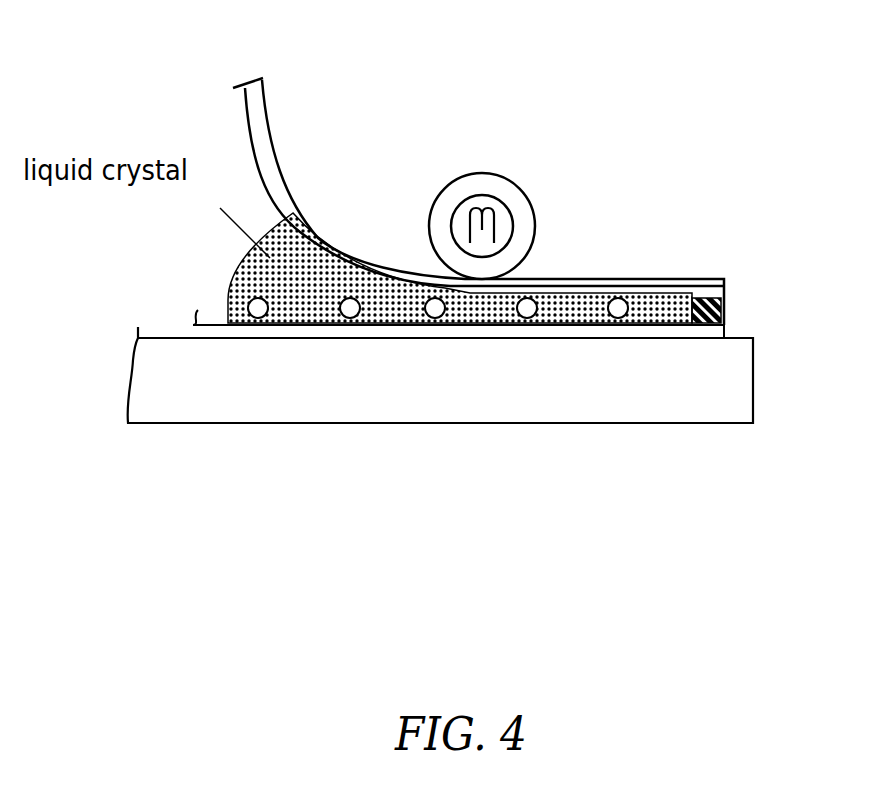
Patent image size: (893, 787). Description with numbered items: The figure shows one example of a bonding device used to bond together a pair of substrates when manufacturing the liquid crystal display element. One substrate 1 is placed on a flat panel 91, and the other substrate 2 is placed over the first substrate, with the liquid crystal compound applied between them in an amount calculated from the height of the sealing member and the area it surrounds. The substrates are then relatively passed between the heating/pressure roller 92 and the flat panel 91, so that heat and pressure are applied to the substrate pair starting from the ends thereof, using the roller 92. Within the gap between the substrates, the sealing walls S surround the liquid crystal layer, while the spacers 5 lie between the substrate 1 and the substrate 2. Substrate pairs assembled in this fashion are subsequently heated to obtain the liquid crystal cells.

The substrate 1 is at (217, 332).
The substrate 2 is at (263, 100).
The spacers 5 is at (527, 316).
The flat panel 91 is at (433, 393).
The heating/pressure roller 92 is at (483, 173).
The sealing walls S is at (723, 308).